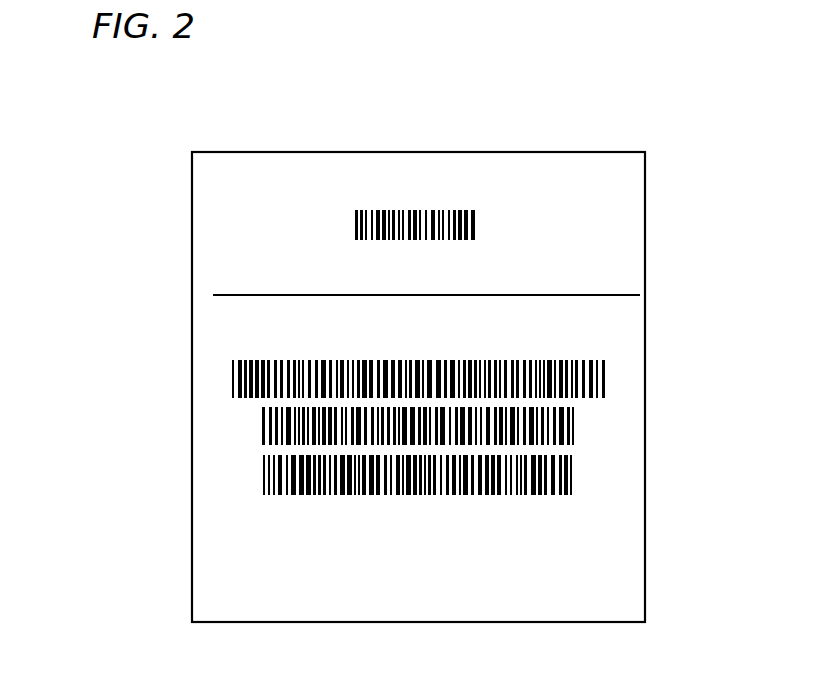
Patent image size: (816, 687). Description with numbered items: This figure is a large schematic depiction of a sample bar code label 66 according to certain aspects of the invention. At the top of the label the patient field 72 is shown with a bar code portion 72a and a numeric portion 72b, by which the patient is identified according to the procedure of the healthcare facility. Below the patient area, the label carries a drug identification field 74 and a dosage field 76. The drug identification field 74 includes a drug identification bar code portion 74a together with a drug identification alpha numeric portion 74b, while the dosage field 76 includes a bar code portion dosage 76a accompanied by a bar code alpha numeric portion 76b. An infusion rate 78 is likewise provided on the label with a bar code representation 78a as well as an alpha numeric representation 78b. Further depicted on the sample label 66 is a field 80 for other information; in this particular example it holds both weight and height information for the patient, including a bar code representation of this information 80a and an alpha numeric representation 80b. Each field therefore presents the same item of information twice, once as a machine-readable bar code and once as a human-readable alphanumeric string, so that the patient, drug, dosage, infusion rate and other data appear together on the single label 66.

The bar code label 66 is at (253, 150).
The patient field 72 is at (312, 194).
The bar code portion 72a is at (354, 207).
The numeric portion 72b is at (330, 266).
The drug identification field 74 is at (237, 348).
The drug identification bar code portion 74a is at (232, 375).
The drug identification alpha numeric portion 74b is at (222, 520).
The dosage field 76 is at (598, 347).
The bar code portion dosage 76a is at (610, 380).
The bar code alpha numeric portion 76b is at (620, 524).
The infusion rate 78 is at (243, 418).
The bar code representation 78a is at (262, 435).
The alpha numeric representation 78b is at (280, 551).
The field for other information 80 is at (250, 463).
The bar code representation 80a is at (263, 478).
The alpha numeric representation 80b is at (282, 579).